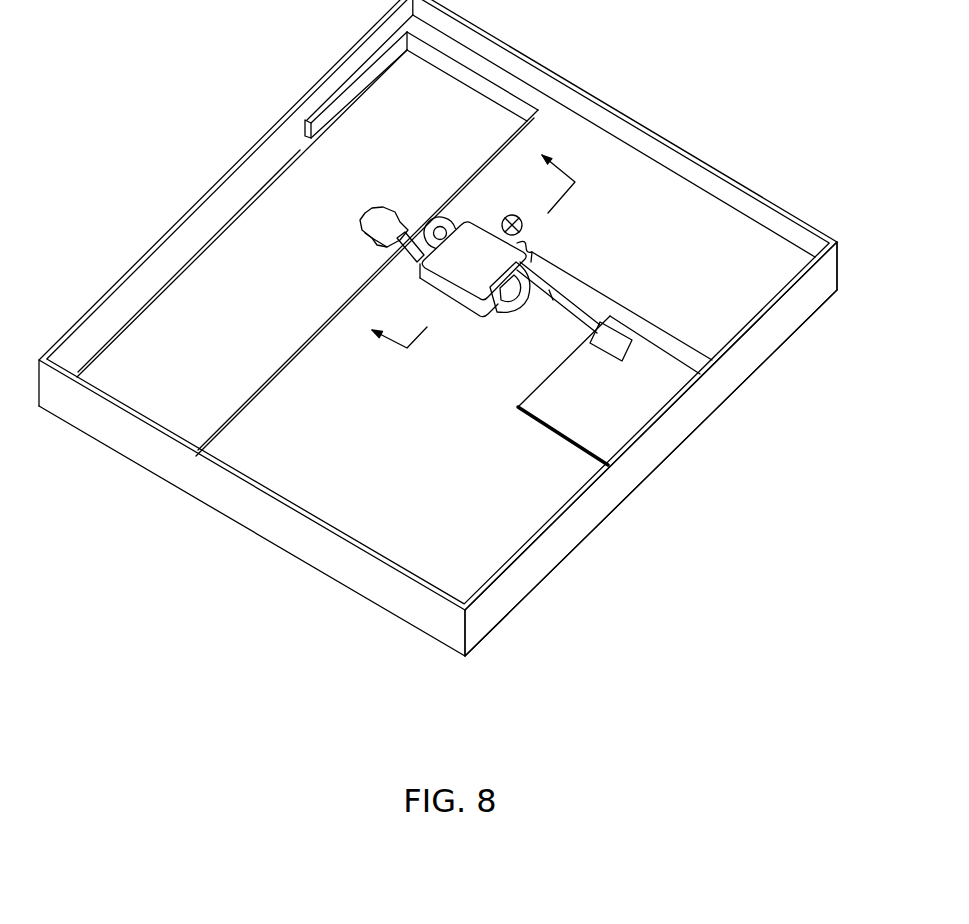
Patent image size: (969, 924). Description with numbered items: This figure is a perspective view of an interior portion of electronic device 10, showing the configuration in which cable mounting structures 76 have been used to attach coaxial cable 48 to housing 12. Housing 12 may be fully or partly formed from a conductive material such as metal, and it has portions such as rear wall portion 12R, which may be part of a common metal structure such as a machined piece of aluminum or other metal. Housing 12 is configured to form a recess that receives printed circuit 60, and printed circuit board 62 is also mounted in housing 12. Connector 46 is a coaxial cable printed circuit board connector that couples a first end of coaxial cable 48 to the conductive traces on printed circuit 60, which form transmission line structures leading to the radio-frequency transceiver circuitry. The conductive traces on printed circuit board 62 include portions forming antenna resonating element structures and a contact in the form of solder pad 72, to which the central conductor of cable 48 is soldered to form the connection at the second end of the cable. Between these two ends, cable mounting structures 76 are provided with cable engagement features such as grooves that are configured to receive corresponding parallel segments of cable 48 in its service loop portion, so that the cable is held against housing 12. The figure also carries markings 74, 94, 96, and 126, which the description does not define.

The electronic device 10 is at (438, 346).
The housing 12 is at (763, 361).
The rear wall portion 12R is at (485, 548).
The connector 46 is at (387, 212).
The coaxial cable 48 is at (518, 335).
The printed circuit 60 is at (174, 313).
The printed circuit board 62 is at (552, 414).
The solder pad 72 is at (620, 345).
The fastener screw 74 is at (513, 215).
The cable mounting structures 76 is at (522, 254).
The signal path 94 is at (565, 195).
The signal direction arrow 96 is at (563, 170).
The inner wall surface 126 is at (645, 178).